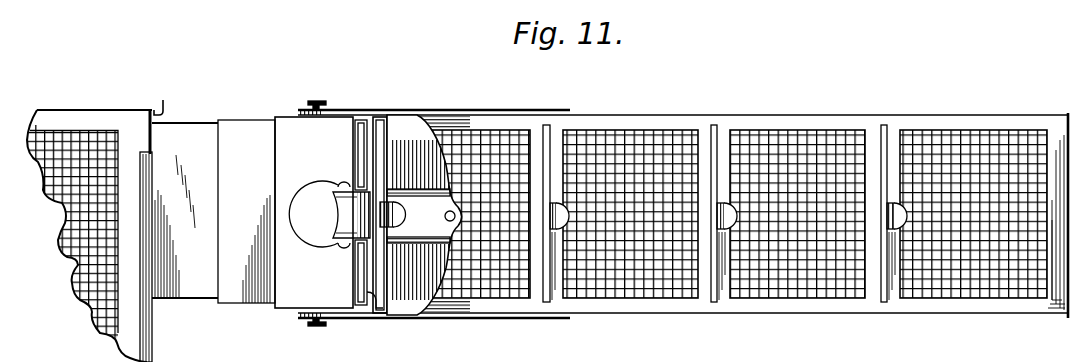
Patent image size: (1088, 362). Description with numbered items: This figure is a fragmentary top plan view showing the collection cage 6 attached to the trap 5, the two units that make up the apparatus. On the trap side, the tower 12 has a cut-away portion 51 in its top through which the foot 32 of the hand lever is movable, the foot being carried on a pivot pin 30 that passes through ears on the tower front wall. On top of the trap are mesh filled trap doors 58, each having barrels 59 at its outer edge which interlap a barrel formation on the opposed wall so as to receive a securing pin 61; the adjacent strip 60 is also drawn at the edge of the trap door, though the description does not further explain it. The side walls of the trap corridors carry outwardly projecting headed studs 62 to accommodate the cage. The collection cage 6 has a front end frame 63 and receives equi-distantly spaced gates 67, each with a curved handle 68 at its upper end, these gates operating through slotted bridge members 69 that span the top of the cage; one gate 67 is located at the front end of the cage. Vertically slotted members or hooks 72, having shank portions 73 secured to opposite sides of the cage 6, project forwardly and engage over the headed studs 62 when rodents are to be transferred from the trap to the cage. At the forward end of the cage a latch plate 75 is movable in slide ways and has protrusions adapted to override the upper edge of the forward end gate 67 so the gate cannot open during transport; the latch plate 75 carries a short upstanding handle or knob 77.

The trap 5 is at (203, 119).
The collection cage 6 is at (709, 110).
The tower 12 is at (275, 303).
The pivot pin 30 is at (344, 247).
The foot 32 is at (345, 205).
The cut-away portion 51 is at (330, 185).
The trap door 58 is at (87, 130).
The barrel 59 is at (155, 140).
The side strip 60 is at (147, 260).
The securing pin 61 is at (163, 104).
The headed stud 62 is at (323, 104).
The front end frame 63 is at (376, 118).
The gate 67 is at (388, 127).
The curved handle 68 is at (403, 216).
The slotted bridge member 69 is at (728, 130).
The hook 72 is at (300, 112).
The shank portion 73 is at (396, 112).
The latch plate 75 is at (412, 190).
The handle 77 is at (446, 221).